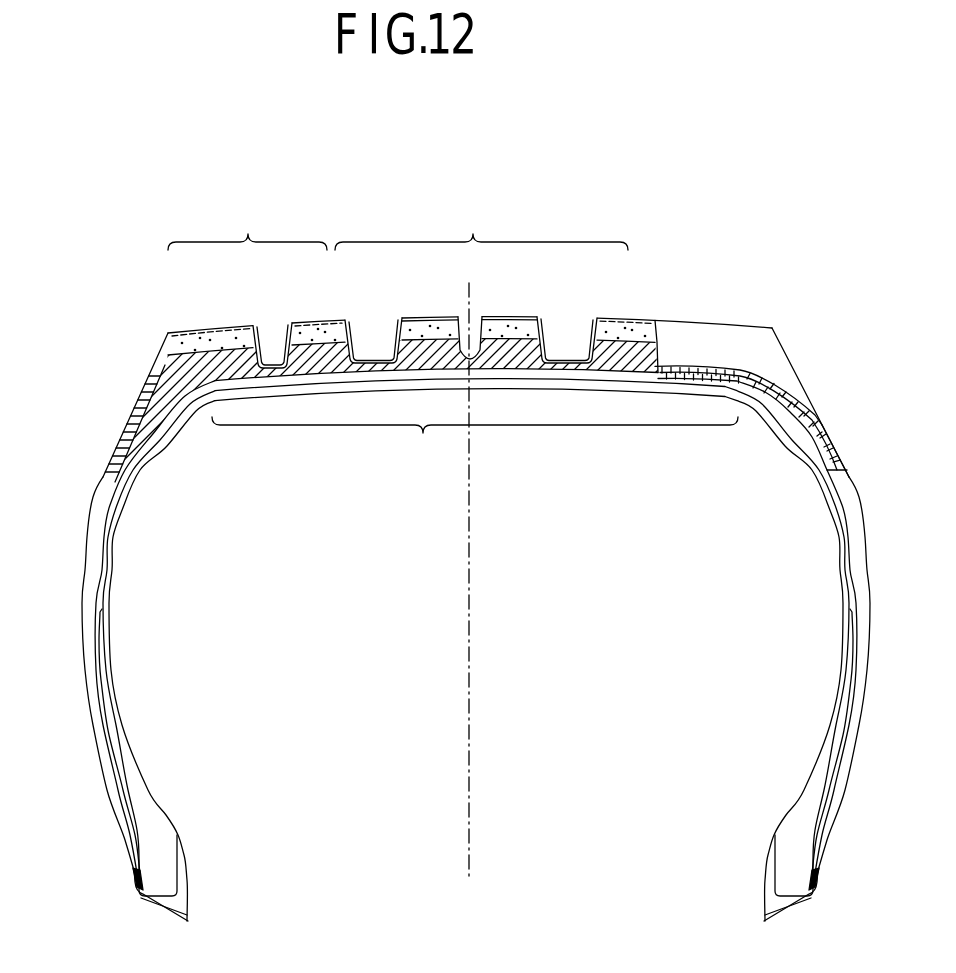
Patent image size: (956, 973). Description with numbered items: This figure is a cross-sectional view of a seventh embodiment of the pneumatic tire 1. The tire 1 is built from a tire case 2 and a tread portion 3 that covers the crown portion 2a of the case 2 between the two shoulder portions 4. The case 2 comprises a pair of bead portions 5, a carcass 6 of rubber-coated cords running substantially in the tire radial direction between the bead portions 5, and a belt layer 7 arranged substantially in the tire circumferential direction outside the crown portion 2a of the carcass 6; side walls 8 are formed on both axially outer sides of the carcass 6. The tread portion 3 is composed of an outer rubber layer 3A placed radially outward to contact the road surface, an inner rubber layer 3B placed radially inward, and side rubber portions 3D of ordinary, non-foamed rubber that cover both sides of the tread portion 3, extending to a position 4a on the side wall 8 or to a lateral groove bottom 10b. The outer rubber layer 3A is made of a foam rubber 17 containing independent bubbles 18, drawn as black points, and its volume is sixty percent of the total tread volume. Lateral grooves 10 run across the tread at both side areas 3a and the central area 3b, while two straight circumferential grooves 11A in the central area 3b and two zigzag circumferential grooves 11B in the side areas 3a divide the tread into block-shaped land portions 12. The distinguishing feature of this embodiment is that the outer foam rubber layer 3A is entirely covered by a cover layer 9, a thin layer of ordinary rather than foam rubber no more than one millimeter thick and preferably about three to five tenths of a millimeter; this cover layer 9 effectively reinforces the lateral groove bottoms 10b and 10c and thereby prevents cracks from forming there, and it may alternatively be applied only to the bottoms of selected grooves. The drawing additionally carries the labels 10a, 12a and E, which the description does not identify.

The pneumatic tire 1 is at (708, 262).
The tire case 2 is at (134, 498).
The crown portion 2a is at (475, 440).
The tread portion 3 is at (642, 323).
The side areas 3a is at (247, 222).
The central area 3b is at (481, 222).
The outer rubber layer 3A is at (338, 367).
The inner rubber layer 3B is at (307, 380).
The side rubber portions 3D is at (813, 397).
The shoulder portions 4 is at (168, 330).
The position on the side wall 4a is at (157, 370).
The bead portions 5 is at (169, 809).
The carcass 6 is at (108, 565).
The belt layer 7 is at (267, 399).
The side walls 8 is at (88, 535).
The cover layer 9 is at (430, 318).
The lateral groove 10 is at (767, 362).
The cushion layer upper face 10a is at (692, 367).
The lateral groove bottom 10b is at (723, 367).
The lateral groove bottom 10c is at (275, 367).
The straight circumferential grooves 11A is at (380, 317).
The zigzag circumferential grooves 11B is at (277, 330).
The block-shaped land portions 12 is at (163, 357).
The shoulder reinforcing layer end 12a is at (790, 393).
The foam rubber 17 is at (308, 333).
The independent bubbles 18 is at (212, 328).
The tire equatorial plane E is at (472, 281).